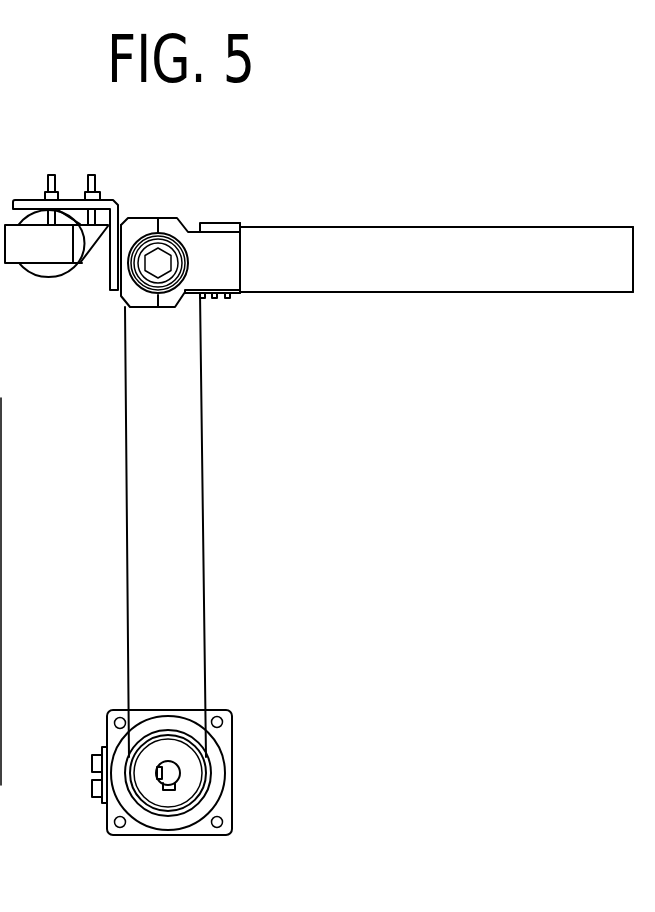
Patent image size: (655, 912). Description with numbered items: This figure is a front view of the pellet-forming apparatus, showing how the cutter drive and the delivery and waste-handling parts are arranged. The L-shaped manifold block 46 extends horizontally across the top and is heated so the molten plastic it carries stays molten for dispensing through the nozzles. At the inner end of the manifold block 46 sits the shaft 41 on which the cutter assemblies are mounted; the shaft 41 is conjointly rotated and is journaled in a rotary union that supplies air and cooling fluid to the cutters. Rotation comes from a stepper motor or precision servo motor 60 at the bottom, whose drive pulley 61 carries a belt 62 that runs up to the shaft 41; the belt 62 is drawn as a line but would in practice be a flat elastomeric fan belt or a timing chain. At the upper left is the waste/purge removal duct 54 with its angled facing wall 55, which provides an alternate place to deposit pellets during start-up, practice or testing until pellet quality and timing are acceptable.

The shaft 41 is at (157, 260).
The L-shaped manifold block 46 is at (378, 227).
The waste/purge removal duct 54 is at (33, 284).
The angled facing wall 55 is at (93, 252).
The precision servo motor 60 is at (232, 773).
The drive pulley 61 is at (190, 770).
The belt 62 is at (203, 565).